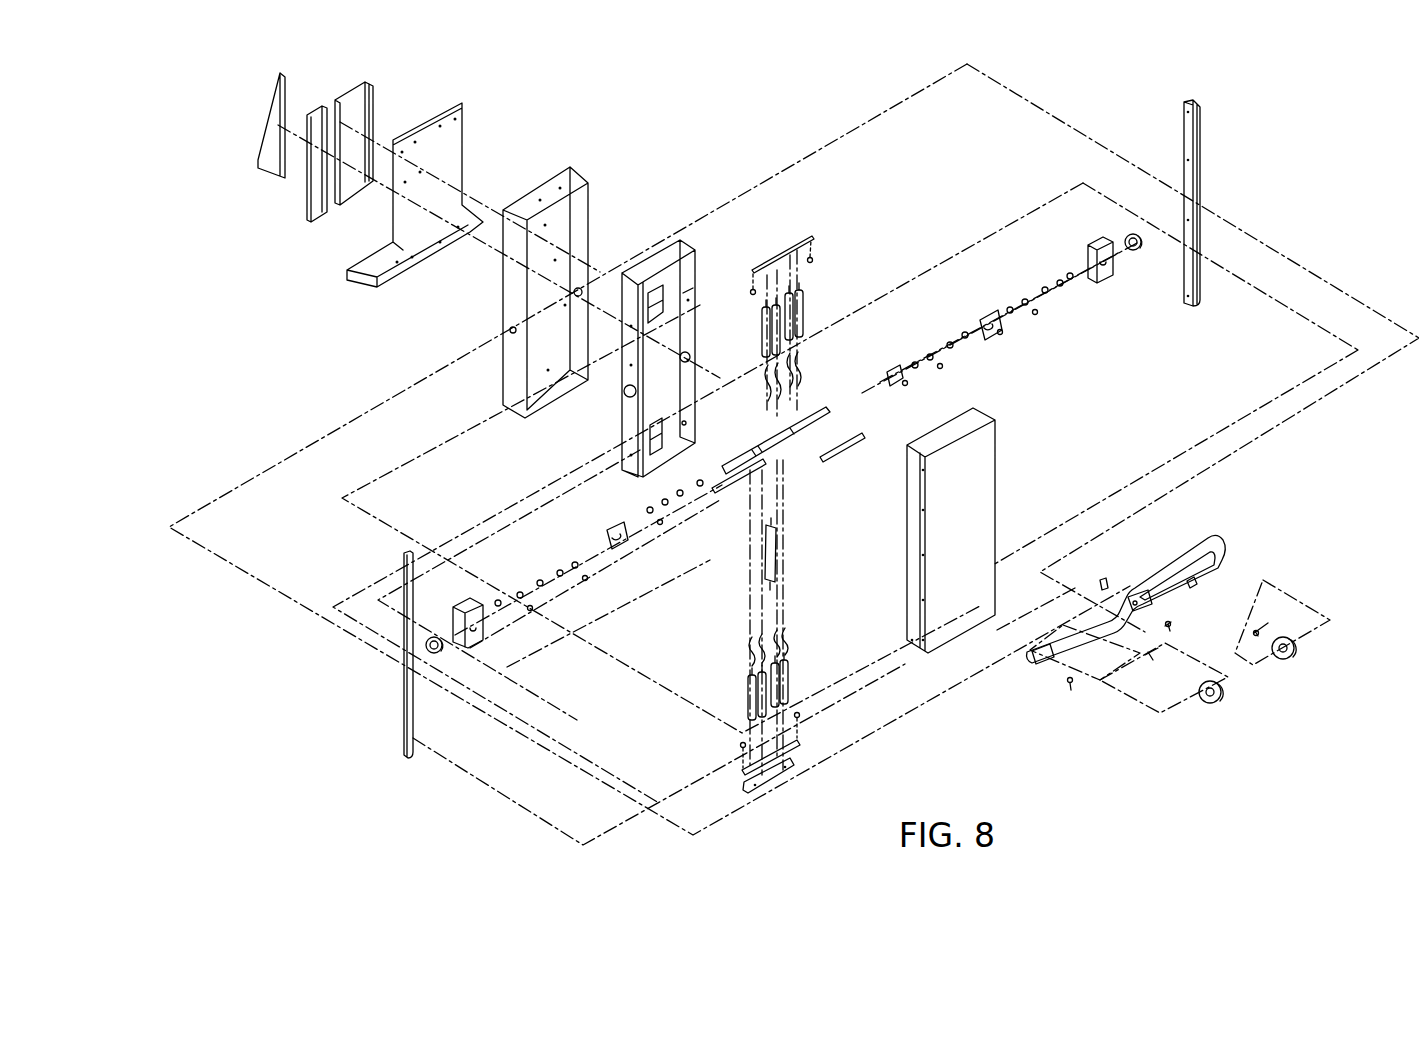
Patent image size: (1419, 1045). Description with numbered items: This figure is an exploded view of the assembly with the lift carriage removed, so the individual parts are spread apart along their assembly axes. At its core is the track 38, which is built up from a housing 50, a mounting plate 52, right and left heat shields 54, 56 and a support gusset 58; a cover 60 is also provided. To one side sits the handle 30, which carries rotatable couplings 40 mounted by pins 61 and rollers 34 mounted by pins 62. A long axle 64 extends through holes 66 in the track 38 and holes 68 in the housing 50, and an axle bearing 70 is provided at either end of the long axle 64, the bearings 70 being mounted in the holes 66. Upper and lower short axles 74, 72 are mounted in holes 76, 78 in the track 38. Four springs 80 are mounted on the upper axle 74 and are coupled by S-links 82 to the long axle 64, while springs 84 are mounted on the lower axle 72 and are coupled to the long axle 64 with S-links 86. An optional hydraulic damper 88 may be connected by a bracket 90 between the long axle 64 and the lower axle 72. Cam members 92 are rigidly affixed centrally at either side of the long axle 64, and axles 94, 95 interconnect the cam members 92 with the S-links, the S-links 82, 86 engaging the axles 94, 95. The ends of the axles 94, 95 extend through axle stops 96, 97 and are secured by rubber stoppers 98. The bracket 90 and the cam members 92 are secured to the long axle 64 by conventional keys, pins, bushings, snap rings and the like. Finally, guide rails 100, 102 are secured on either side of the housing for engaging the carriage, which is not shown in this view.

The handle 30 is at (1222, 540).
The rollers 34 is at (1296, 649).
The track 38 is at (672, 242).
The rotatable couplings 40 is at (1138, 612).
The housing 50 is at (555, 180).
The mounting plate 52 is at (456, 110).
The right heat shield 54 is at (338, 96).
The left heat shield 56 is at (312, 222).
The support gusset 58 is at (270, 122).
The cover 60 is at (920, 648).
The pins 61 is at (1072, 686).
The pins 62 is at (1262, 628).
The long axle 64 is at (790, 452).
The holes 66 is at (690, 357).
The holes 68 is at (581, 289).
The axle bearing 70 is at (1138, 252).
The lower short axle 72 is at (800, 764).
The upper short axle 74 is at (784, 252).
The hole 76 is at (686, 423).
The hole 78 is at (688, 293).
The springs 80 is at (800, 292).
The S-links 82 is at (800, 367).
The springs 84 is at (790, 680).
The S-links 86 is at (787, 642).
The hydraulic damper 88 is at (778, 577).
The bracket 90 is at (890, 372).
The cam members 92 is at (998, 337).
The axle 94 is at (740, 497).
The axle 95 is at (862, 442).
The axle stop 96 is at (1105, 282).
The axle stop 97 is at (480, 650).
The rubber stoppers 98 is at (1070, 274).
The guide rail 100 is at (406, 554).
The guide rail 102 is at (1196, 102).